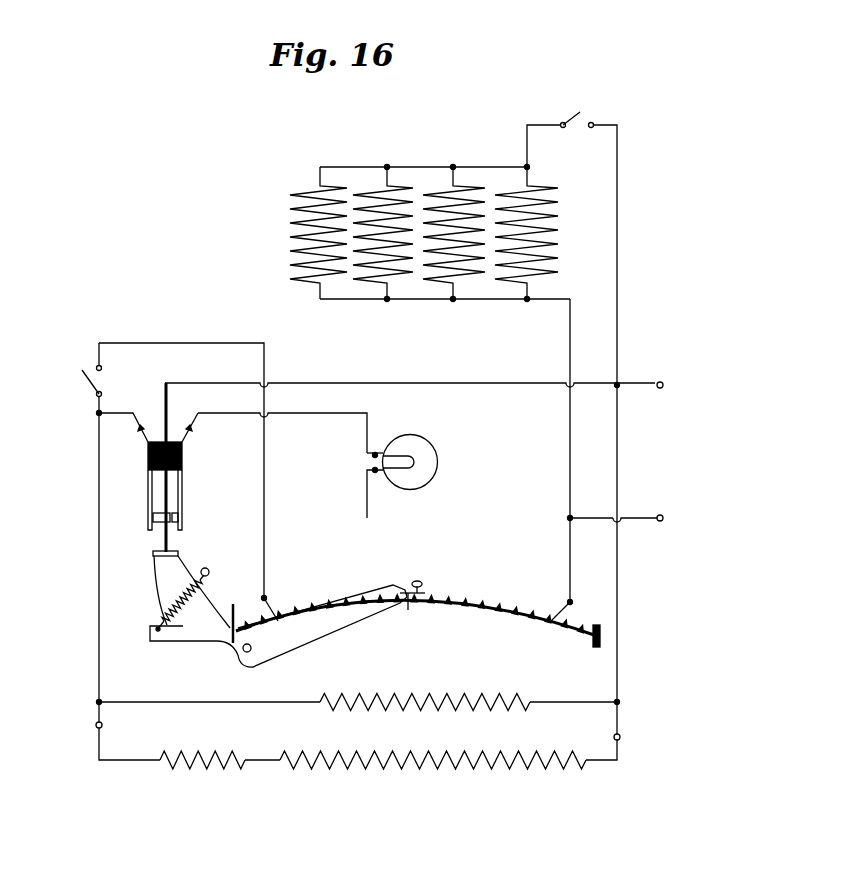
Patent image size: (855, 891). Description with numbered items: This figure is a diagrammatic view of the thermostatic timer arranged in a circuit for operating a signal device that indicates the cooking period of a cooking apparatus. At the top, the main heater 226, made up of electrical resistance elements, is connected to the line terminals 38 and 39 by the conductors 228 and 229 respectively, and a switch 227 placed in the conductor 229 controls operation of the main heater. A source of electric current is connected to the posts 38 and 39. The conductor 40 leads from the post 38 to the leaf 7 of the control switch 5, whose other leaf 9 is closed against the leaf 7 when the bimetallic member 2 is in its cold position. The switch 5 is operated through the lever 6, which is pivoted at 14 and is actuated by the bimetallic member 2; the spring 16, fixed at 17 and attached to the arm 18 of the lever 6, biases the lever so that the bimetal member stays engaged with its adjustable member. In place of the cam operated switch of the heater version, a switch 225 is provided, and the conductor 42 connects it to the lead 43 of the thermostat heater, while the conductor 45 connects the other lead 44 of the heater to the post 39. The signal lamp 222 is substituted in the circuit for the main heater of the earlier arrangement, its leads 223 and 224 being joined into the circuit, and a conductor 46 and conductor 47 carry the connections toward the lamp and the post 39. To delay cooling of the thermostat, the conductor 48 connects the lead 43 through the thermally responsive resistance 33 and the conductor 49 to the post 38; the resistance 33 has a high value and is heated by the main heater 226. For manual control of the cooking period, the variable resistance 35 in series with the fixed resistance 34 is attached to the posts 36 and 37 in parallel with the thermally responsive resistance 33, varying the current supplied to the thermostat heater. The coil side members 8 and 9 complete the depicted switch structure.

The bimetallic member 2 is at (577, 636).
The control switch 5 is at (176, 442).
The lever 6 is at (330, 630).
The leaf 7 is at (168, 482).
The coil frame side 8 is at (183, 499).
The leaf 9 is at (147, 488).
The pivot 14 is at (244, 652).
The spring 16 is at (165, 612).
The spring fixing point 17 is at (212, 570).
The arm 18 is at (175, 641).
The thermally responsive resistance 33 is at (456, 693).
The fixed resistance 34 is at (536, 755).
The variable resistance 35 is at (192, 741).
The post 36 is at (622, 737).
The post 37 is at (95, 725).
The post 38 is at (664, 383).
The post 39 is at (664, 517).
The conductor 40 is at (398, 383).
The conductor 42 is at (166, 343).
The lead 43 is at (265, 598).
The lead 44 is at (569, 602).
The conductor 45 is at (571, 580).
The conductor 46 is at (325, 414).
The conductor 47 is at (590, 516).
The conductor 48 is at (97, 635).
The conductor 49 is at (590, 704).
The signal lamp 222 is at (432, 475).
The lamp lead 223 is at (376, 453).
The lamp lead 224 is at (376, 472).
The switch 225 is at (88, 376).
The main heater 226 is at (290, 226).
The switch 227 is at (582, 113).
The conductor 228 is at (570, 422).
The conductor 229 is at (617, 276).